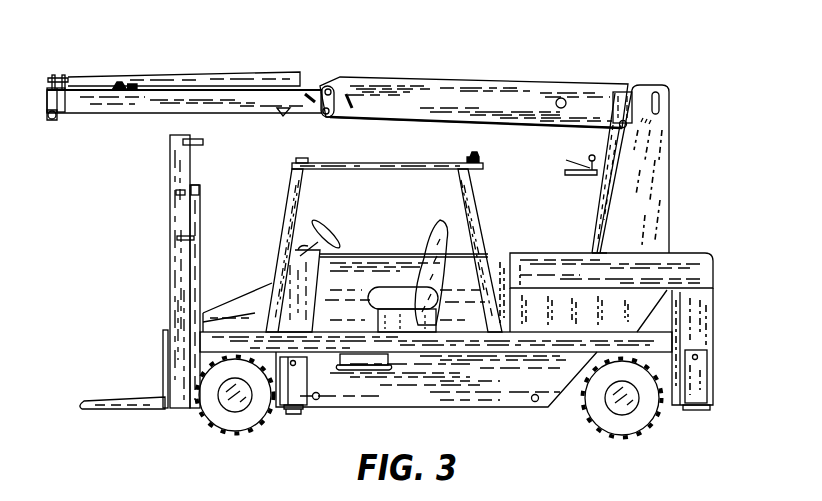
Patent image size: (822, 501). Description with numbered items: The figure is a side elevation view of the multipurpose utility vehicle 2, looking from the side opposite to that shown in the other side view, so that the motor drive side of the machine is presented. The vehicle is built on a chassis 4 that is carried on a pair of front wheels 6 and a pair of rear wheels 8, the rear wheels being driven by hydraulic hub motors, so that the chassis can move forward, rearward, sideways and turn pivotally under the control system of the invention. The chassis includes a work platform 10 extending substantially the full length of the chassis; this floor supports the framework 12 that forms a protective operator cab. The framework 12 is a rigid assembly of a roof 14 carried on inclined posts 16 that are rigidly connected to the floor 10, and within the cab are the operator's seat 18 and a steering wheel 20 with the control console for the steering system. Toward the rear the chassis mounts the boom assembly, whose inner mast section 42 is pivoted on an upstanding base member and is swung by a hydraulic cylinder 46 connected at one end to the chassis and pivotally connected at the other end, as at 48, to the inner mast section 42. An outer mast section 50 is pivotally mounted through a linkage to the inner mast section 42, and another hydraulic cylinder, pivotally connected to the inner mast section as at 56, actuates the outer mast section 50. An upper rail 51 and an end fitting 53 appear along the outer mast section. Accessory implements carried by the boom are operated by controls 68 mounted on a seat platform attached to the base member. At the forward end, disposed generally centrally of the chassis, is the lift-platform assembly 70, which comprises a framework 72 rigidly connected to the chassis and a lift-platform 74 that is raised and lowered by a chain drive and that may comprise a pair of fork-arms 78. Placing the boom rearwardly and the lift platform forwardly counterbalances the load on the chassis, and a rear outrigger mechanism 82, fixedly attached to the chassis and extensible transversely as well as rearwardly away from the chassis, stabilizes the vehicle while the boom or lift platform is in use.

The multipurpose utility vehicle 2 is at (634, 72).
The chassis 4 is at (708, 250).
The front wheels 6 is at (218, 421).
The rear wheels 8 is at (640, 414).
The work platform 10 is at (538, 322).
The framework 12 is at (408, 157).
The roof 14 is at (327, 163).
The inclined posts 16 is at (282, 210).
The seat 18 is at (423, 232).
The steering wheel 20 is at (312, 247).
The inner mast section 42 is at (467, 95).
The hydraulic cylinder 46 is at (605, 202).
The pivotal connection 48 is at (628, 128).
The outer mast section 50 is at (227, 97).
The extension rail 51 is at (182, 73).
The boom end fitting 53 is at (68, 85).
The pivotal connection 56 is at (566, 98).
The controls 68 is at (589, 157).
The lift-platform assembly 70 is at (158, 221).
The framework 72 is at (176, 287).
The lift-platform 74 is at (112, 392).
The fork-arms 78 is at (120, 406).
The rear outrigger mechanism 82 is at (724, 330).